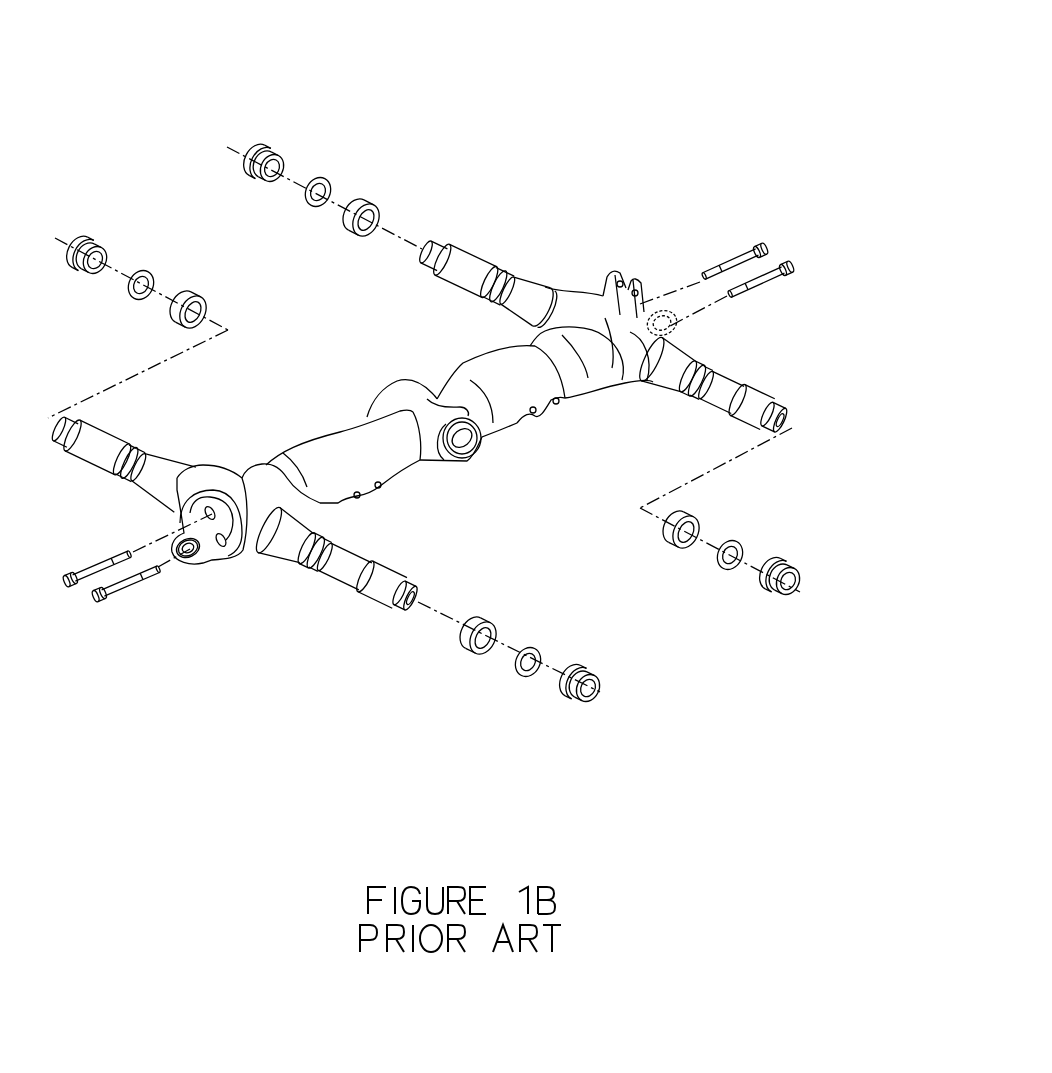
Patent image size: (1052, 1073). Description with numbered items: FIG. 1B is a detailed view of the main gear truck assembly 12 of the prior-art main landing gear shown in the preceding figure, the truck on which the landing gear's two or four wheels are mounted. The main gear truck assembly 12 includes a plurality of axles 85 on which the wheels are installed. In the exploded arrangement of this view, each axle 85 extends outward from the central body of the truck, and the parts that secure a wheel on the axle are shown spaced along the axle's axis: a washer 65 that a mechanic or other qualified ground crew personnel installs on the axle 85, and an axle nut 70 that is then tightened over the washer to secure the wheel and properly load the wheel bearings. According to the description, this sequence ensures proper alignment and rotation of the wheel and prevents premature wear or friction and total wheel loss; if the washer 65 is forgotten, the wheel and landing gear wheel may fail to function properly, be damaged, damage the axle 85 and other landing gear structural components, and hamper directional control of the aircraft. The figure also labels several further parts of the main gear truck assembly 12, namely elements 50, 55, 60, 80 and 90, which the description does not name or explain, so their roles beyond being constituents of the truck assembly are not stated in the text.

The main gear truck assembly 12 is at (612, 88).
The bolt 50 is at (727, 260).
The mounting boss bore 55 is at (197, 566).
The bushing 60 is at (482, 618).
The washer 65 is at (532, 640).
The axle nut 70 is at (587, 670).
The center housing 80 is at (400, 382).
The axle 85 is at (718, 408).
The axle arm 90 is at (547, 283).